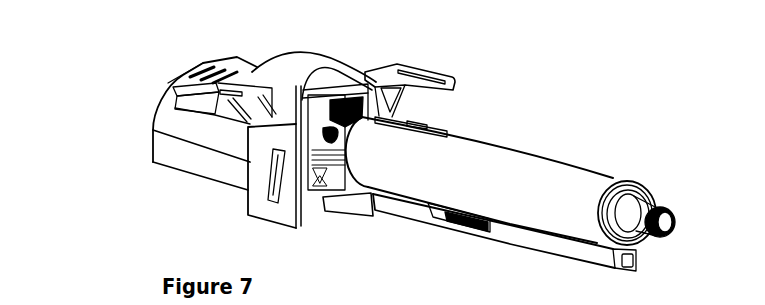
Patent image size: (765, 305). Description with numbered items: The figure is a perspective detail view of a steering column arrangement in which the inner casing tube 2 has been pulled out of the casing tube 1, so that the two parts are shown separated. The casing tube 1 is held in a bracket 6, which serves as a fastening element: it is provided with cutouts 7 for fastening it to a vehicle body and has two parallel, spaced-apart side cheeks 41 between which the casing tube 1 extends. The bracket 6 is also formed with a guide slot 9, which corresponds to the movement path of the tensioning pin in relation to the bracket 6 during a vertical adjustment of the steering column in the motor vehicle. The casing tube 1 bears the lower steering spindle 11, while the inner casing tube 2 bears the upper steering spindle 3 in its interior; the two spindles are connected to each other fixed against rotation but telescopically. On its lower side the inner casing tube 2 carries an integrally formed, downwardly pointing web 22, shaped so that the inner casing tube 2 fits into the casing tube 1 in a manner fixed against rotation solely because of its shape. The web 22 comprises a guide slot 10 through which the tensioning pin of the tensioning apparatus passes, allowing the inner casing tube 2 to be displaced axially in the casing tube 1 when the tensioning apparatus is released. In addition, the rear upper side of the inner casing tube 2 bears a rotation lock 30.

The casing tube 1 is at (177, 152).
The inner casing tube 2 is at (537, 172).
The upper steering spindle 3 is at (635, 218).
The bracket 6 is at (303, 65).
The cutouts 7 is at (415, 77).
The guide slots 9 is at (267, 178).
The guide slot 10 is at (488, 242).
The lower steering spindle 11 is at (330, 133).
The web 22 is at (573, 248).
The rotation lock 30 is at (422, 127).
The side cheeks 41 is at (283, 212).